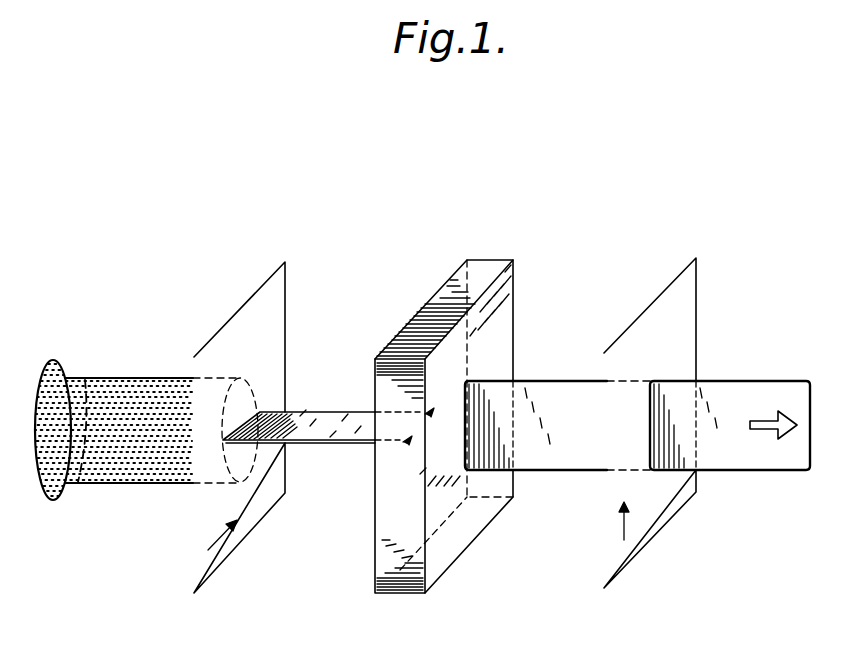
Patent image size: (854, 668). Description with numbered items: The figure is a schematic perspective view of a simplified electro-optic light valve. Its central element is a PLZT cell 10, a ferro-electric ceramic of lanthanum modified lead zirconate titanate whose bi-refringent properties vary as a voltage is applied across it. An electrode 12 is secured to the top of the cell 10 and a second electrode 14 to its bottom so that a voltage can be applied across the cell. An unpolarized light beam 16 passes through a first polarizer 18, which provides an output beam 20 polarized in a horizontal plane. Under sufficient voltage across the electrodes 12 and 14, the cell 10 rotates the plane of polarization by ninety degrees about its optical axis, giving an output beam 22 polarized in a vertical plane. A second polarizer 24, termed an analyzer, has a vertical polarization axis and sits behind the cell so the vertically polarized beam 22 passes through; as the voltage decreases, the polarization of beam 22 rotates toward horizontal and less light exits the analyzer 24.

The PLZT cell 10 is at (515, 278).
The electrode 12 is at (427, 318).
The second electrode 14 is at (440, 555).
The unpolarized light beam 16 is at (133, 483).
The first polarizer 18 is at (265, 297).
The output beam 20 is at (323, 422).
The output beam 22 is at (554, 396).
The second polarizer 24 is at (692, 290).